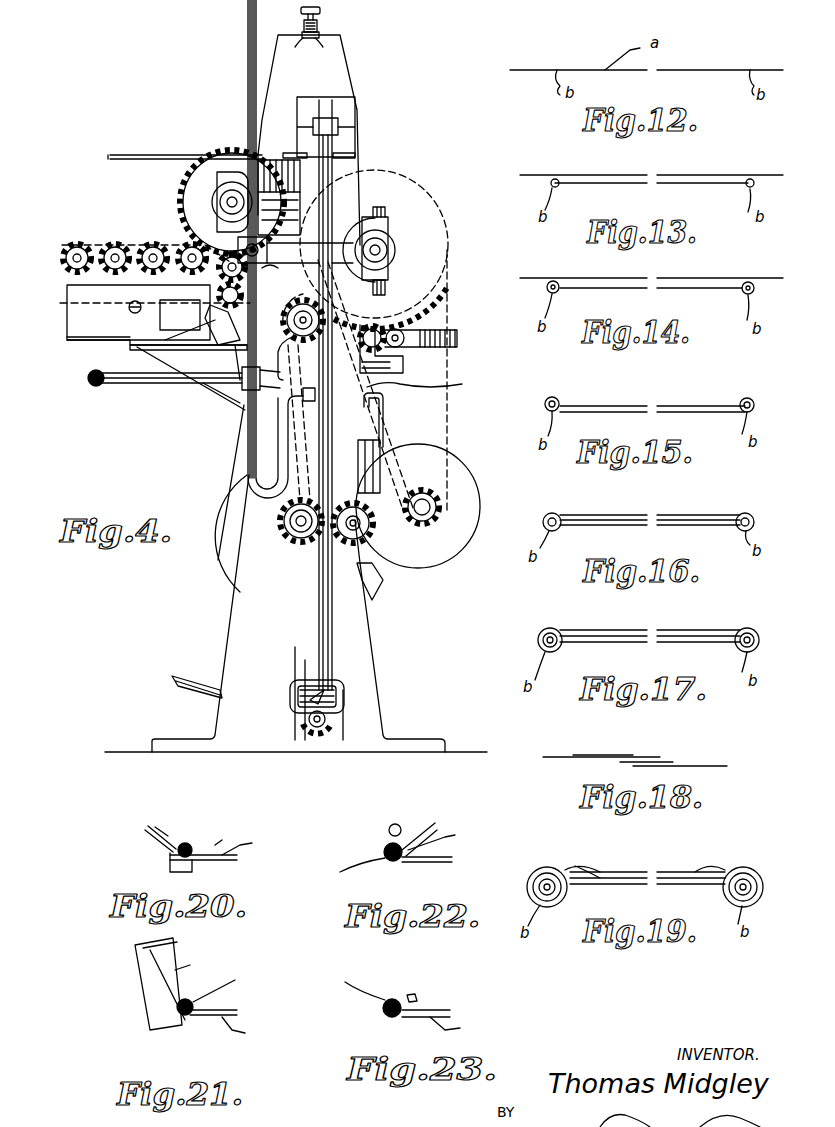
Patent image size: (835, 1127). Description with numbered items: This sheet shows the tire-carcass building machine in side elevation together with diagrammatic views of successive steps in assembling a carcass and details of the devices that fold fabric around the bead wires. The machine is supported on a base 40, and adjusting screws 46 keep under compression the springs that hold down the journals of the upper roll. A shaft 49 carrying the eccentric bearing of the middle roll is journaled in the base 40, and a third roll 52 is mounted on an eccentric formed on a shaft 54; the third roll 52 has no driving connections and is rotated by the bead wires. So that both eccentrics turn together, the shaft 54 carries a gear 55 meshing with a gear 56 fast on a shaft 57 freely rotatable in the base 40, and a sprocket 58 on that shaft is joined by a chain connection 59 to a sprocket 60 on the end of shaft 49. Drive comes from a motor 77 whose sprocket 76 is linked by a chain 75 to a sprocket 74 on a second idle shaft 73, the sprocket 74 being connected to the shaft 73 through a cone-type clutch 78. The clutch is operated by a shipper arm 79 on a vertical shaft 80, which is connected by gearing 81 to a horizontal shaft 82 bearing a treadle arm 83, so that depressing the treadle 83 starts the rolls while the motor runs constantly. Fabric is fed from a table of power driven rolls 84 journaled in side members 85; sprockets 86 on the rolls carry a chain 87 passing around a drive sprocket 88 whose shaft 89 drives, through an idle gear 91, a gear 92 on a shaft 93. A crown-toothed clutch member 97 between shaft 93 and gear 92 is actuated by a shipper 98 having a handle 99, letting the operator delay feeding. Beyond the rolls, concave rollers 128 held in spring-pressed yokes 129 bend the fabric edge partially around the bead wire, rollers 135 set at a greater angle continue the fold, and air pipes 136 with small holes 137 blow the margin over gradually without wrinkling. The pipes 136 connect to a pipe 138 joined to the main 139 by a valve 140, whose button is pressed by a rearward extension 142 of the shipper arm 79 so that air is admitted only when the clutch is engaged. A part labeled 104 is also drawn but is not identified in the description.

In FIG. 4, the base 40 is at (296, 613).
In FIG. 4, the adjusting screws 46 is at (322, 18).
In FIG. 4, the shaft 49 is at (298, 314).
In FIG. 4, the third roll 52 is at (233, 568).
In FIG. 4, the shaft 54 is at (290, 540).
In FIG. 4, the gear 55 is at (302, 562).
In FIG. 4, the gear 56 is at (352, 550).
In FIG. 4, the shaft 57 is at (380, 567).
In FIG. 4, the sprocket 58 is at (355, 482).
In FIG. 4, the chain connection 59 is at (293, 368).
In FIG. 4, the sprocket 60 is at (290, 337).
In FIG. 4, the second idle shaft 73 is at (385, 254).
In FIG. 4, the sprocket 74 is at (398, 196).
In FIG. 4, the chain 75 is at (452, 310).
In FIG. 4, the sprocket 76 is at (430, 498).
In FIG. 4, the motor 77 is at (455, 480).
In FIG. 4, the clutch 78 is at (387, 250).
In FIG. 4, the shipper arm 79 is at (345, 205).
In FIG. 4, the vertical shaft 80 is at (337, 140).
In FIG. 4, the gearing 81 is at (355, 692).
In FIG. 4, the horizontal shaft 82 is at (340, 718).
In FIG. 4, the treadle arm 83 is at (170, 678).
In FIG. 4, the power driven rolls 84 is at (74, 247).
In FIG. 4, the side members 85 is at (66, 289).
In FIG. 4, the sprockets 86 is at (58, 266).
In FIG. 4, the chain 87 is at (62, 300).
In FIG. 4, the drive sprocket 88 is at (208, 332).
In FIG. 4, the shaft 89 is at (232, 335).
In FIG. 4, the idle gear 91 is at (215, 268).
In FIG. 4, the gear 92 is at (180, 200).
In FIG. 4, the shaft 93 is at (230, 202).
In FIG. 4, the crown-toothed clutch member 97 is at (223, 203).
In FIG. 4, the shipper 98 is at (215, 160).
In FIG. 4, the handle 99 is at (126, 158).
In FIG. 4, the slide 104 is at (82, 325).
In FIG. 4, the concave rollers 128 is at (385, 362).
In FIG. 20, the concave rollers 128 is at (168, 862).
In FIG. 4, the yokes 129 is at (375, 312).
In FIG. 4, the rollers 135 is at (433, 385).
In FIG. 21, the rollers 135 is at (150, 1012).
In FIG. 4, the pipes 136 is at (385, 420).
In FIG. 22, the pipes 136 is at (398, 825).
In FIG. 23, the pipes 136 is at (414, 994).
In FIG. 22, the small holes 137 is at (428, 830).
In FIG. 23, the small holes 137 is at (418, 1005).
In FIG. 4, the pipe 138 is at (243, 443).
In FIG. 4, the main 139 is at (247, 64).
In FIG. 4, the valve 140 is at (282, 267).
In FIG. 4, the rearward extension 142 is at (276, 239).